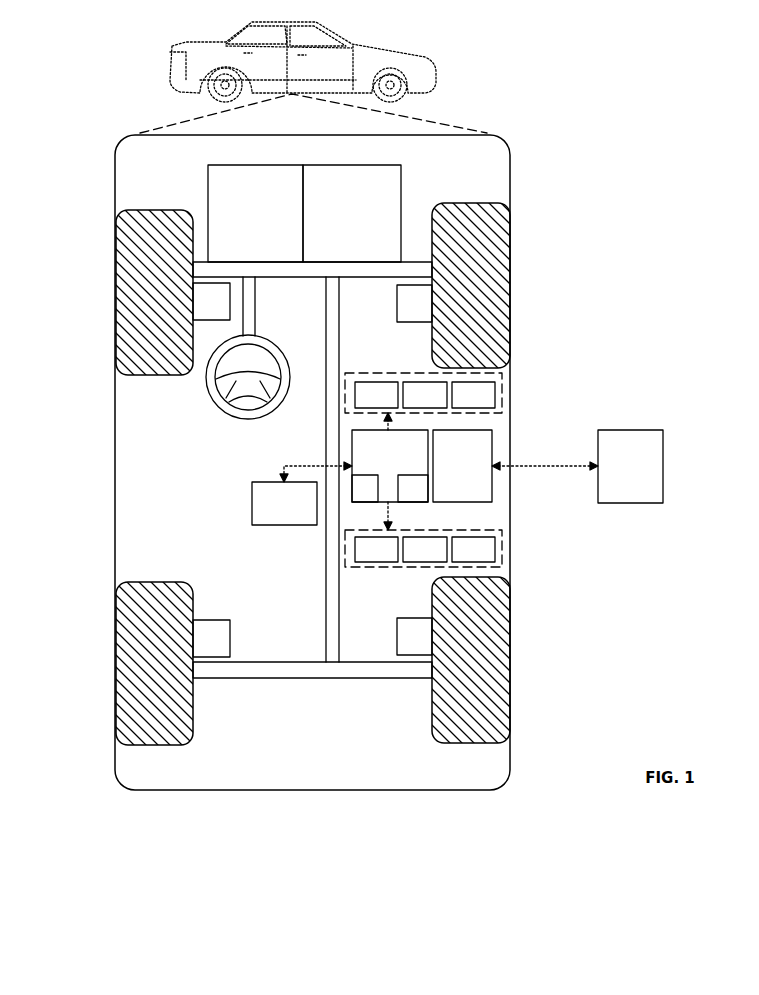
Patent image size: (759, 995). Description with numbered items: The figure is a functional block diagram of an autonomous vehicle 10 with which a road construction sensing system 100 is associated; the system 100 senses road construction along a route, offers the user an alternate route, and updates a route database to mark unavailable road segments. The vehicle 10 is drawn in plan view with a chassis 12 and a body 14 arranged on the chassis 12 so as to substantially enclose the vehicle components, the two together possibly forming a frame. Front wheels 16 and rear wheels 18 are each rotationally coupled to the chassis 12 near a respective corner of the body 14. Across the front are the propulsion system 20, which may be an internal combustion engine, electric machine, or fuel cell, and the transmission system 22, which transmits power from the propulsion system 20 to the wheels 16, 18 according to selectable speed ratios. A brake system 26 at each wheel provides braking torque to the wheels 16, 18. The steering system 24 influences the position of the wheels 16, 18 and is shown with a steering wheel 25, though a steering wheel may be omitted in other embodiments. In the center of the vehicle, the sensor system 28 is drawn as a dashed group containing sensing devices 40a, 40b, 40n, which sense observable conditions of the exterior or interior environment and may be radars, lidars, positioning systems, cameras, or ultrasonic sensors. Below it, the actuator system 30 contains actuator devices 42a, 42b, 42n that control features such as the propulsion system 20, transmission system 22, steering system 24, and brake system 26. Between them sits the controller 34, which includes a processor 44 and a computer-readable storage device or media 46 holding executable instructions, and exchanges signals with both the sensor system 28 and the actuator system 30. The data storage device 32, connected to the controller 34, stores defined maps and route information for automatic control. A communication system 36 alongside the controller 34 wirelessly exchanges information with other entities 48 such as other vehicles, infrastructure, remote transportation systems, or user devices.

The vehicle 10 is at (170, 60).
The chassis 12 is at (385, 680).
The body 14 is at (113, 448).
The front wheels 16 is at (150, 210).
The rear wheels 18 is at (170, 745).
The propulsion system 20 is at (255, 213).
The transmission system 22 is at (352, 213).
The steering system 24 is at (272, 297).
The steering wheel 25 is at (235, 421).
The brake system 26 is at (312, 470).
The sensor system 28 is at (370, 373).
The actuator system 30 is at (394, 568).
The data storage device 32 is at (284, 503).
The controller 34 is at (390, 466).
The communication system 36 is at (462, 466).
The sensing device 40a is at (376, 395).
The sensing device 40b is at (425, 395).
The sensing device 40n is at (473, 395).
The actuator device 42a is at (376, 549).
The actuator device 42b is at (425, 549).
The actuator device 42n is at (473, 549).
The processor 44 is at (365, 488).
The computer-readable storage device or media 46 is at (413, 488).
The other entities 48 is at (630, 466).
The road construction sensing system 100 is at (527, 323).